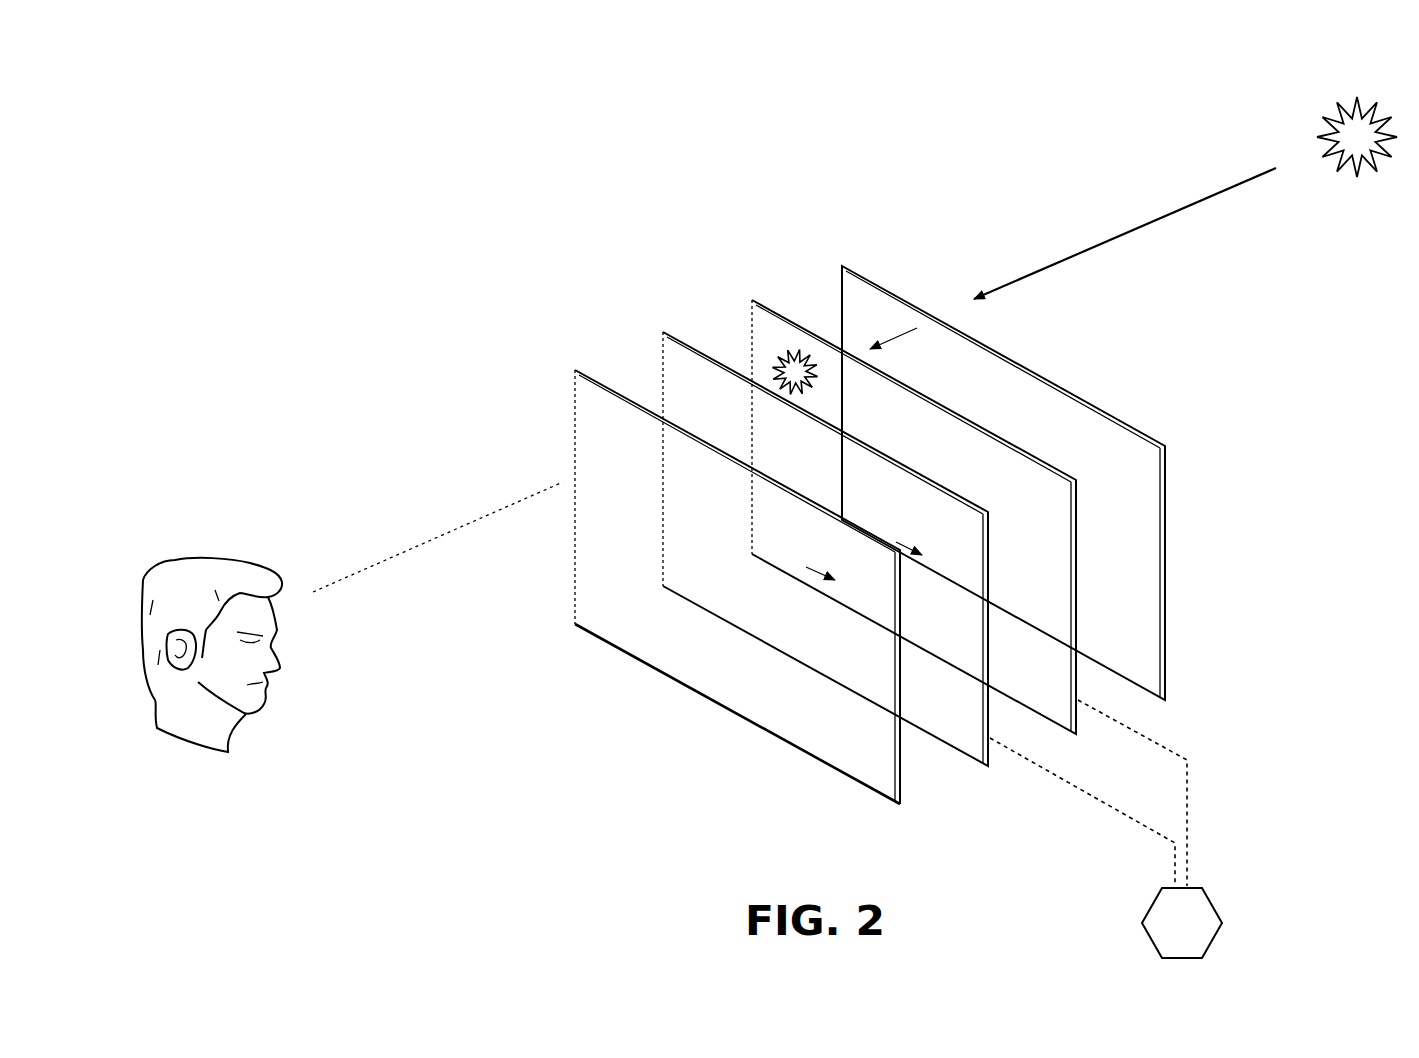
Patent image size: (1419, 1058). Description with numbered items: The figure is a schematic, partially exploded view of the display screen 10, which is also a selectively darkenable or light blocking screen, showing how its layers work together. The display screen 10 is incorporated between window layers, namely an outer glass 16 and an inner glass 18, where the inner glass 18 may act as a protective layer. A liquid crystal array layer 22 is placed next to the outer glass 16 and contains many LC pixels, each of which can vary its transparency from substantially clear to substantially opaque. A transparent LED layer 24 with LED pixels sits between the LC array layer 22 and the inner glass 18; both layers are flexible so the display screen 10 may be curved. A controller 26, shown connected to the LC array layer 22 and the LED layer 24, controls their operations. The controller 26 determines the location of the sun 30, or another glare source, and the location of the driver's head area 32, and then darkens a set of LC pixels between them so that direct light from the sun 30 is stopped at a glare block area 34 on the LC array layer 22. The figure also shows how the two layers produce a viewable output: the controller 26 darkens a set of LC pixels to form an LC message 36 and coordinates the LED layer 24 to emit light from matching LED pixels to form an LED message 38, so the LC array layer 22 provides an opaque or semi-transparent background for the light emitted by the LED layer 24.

The display screen 10 is at (899, 571).
The outer glass 16 is at (871, 283).
The inner glass 18 is at (761, 552).
The LC array layer 22 is at (930, 494).
The transparent LED layer 24 is at (846, 526).
The controller 26 is at (1167, 938).
The sun 30 is at (1322, 137).
The head area 32 is at (245, 578).
The glare block area 34 is at (780, 371).
The LC message 36 is at (1006, 650).
The LED message 38 is at (919, 678).